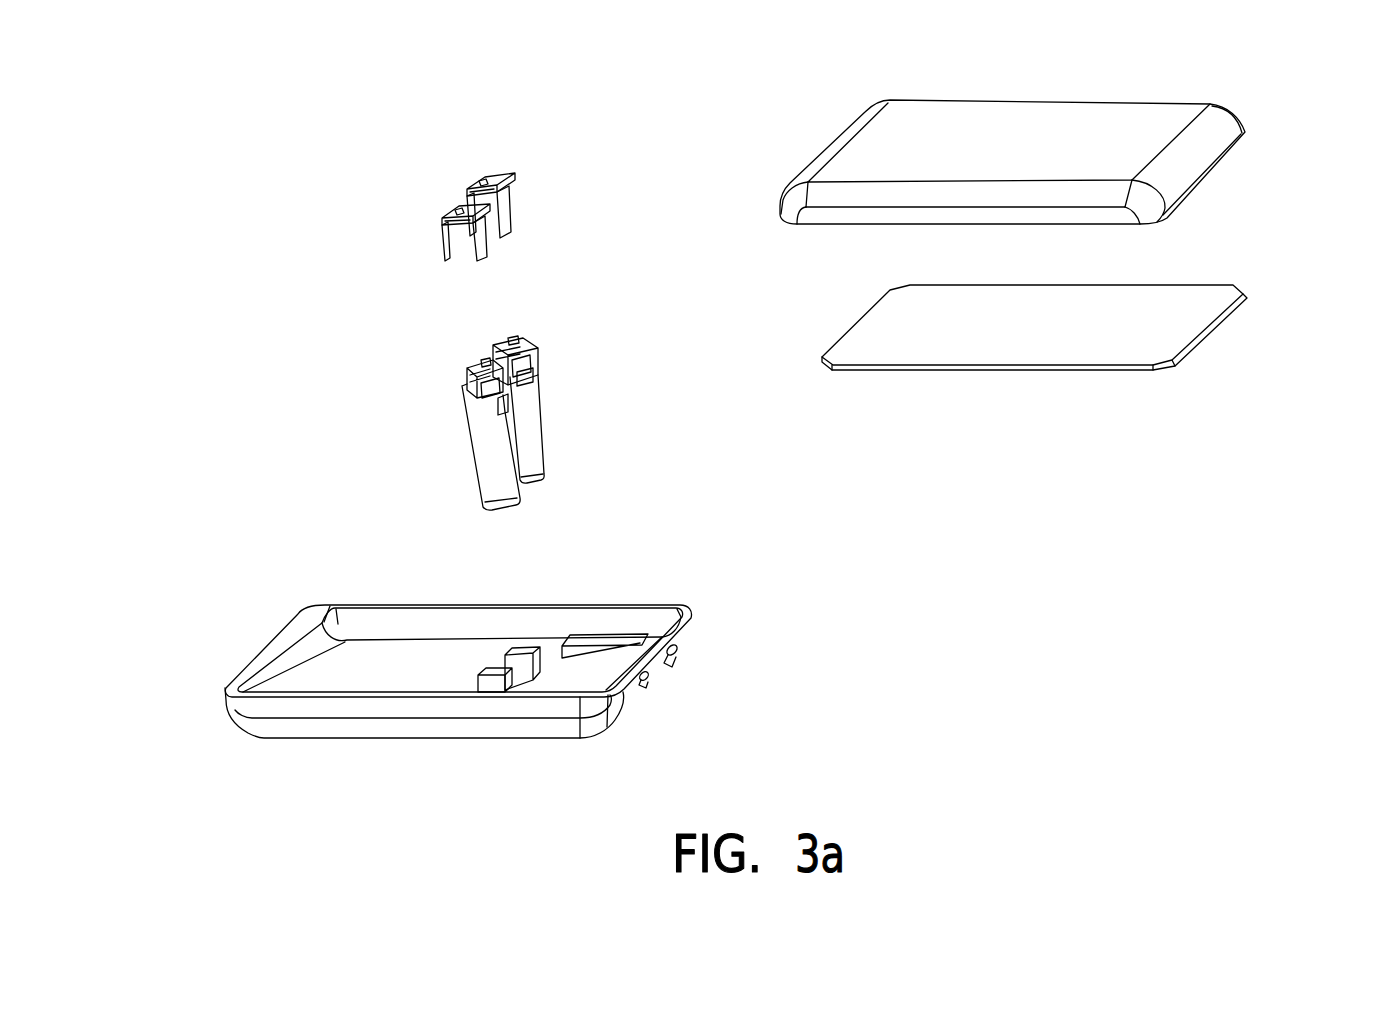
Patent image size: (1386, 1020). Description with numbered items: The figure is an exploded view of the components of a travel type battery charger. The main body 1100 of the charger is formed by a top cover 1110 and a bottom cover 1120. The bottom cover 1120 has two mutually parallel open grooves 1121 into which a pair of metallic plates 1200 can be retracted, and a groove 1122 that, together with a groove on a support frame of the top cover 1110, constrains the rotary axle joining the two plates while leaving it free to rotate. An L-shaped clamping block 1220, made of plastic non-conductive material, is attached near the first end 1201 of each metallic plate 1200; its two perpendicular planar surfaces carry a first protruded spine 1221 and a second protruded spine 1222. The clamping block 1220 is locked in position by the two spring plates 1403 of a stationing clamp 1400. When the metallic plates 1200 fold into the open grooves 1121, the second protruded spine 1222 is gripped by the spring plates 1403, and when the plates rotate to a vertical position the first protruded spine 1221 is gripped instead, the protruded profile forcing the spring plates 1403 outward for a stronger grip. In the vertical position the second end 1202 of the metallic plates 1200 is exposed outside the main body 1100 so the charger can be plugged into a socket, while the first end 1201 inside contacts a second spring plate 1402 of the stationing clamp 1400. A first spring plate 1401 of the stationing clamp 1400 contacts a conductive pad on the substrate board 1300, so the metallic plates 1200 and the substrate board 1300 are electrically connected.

The main body 1100 is at (1212, 610).
The top cover 1110 is at (1215, 148).
The bottom cover 1120 is at (236, 718).
The open grooves 1121 is at (634, 691).
The groove 1122 is at (526, 678).
The metallic plates 1200 is at (495, 429).
The first end 1201 is at (518, 340).
The second end 1202 is at (493, 507).
The L-shaped clamping block 1220 is at (537, 367).
The first protruded spine 1221 is at (530, 383).
The second protruded spine 1222 is at (490, 353).
The substrate board 1300 is at (1198, 312).
The stationing clamp 1400 is at (480, 215).
The first spring plate 1401 is at (482, 183).
The second spring plate 1402 is at (513, 177).
The spring plates 1403 is at (508, 223).